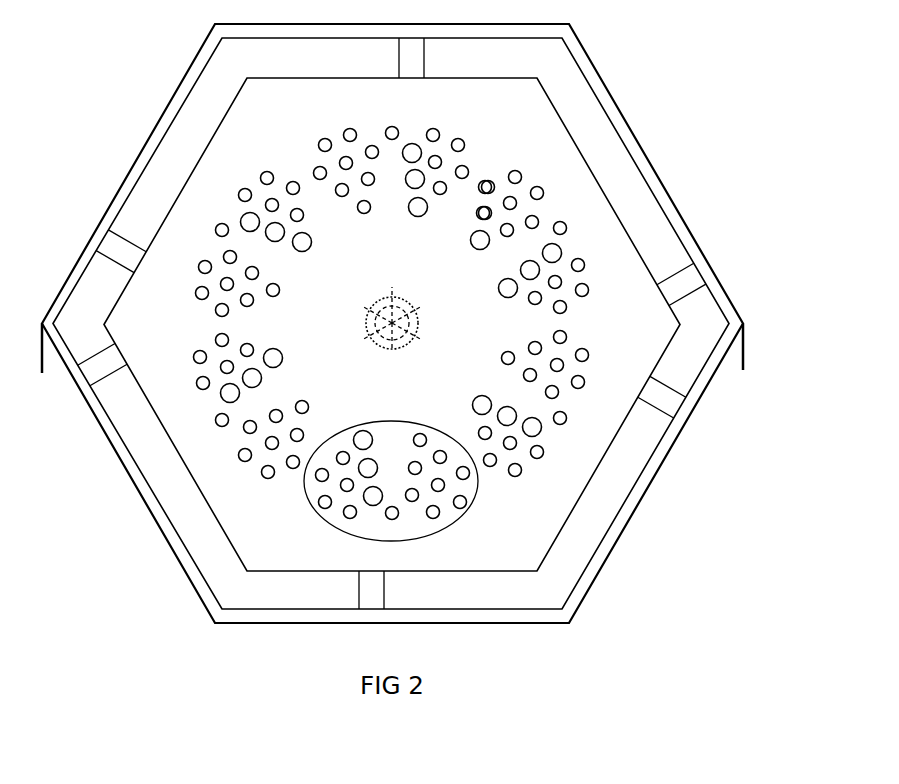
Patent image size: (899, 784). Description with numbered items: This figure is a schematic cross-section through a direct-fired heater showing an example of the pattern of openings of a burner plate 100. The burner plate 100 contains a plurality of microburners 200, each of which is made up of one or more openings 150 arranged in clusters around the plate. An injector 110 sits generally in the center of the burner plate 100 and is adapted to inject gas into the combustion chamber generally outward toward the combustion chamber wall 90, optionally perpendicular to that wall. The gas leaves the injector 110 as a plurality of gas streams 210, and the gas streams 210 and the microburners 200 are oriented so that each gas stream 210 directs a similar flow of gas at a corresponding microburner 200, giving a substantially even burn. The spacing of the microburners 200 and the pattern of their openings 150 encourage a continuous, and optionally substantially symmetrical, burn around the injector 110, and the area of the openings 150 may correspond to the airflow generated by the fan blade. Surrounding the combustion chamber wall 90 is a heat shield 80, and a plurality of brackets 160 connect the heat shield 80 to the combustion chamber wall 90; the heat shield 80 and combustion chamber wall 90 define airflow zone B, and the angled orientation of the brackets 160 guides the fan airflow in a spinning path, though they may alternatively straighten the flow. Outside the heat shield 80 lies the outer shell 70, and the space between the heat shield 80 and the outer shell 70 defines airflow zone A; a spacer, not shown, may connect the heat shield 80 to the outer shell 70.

The outer shell 70 is at (648, 492).
The heat shield 80 is at (647, 466).
The combustion chamber wall 90 is at (618, 435).
The burner plate 100 is at (483, 341).
The injector 110 is at (374, 338).
The opening 150 is at (318, 504).
The bracket 160 is at (672, 403).
The microburner 200 is at (443, 536).
The gas stream 210 is at (392, 288).
The airflow zone A is at (497, 611).
The airflow zone B is at (587, 520).